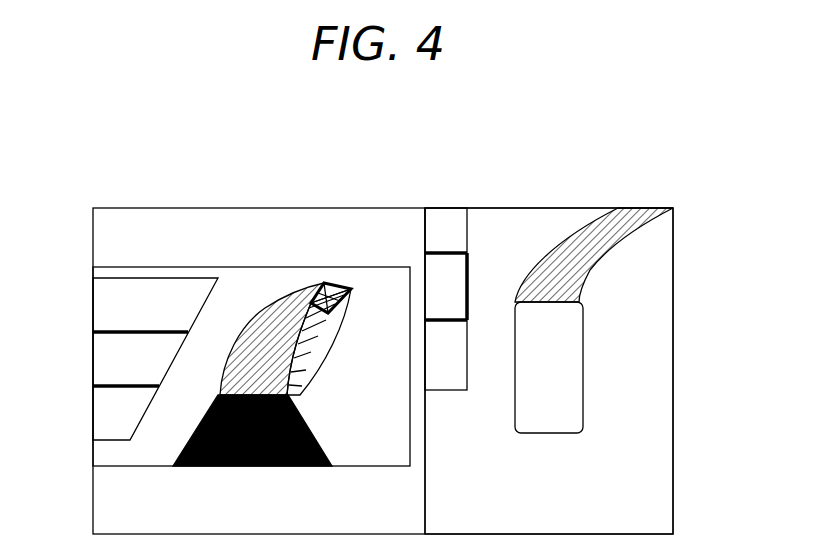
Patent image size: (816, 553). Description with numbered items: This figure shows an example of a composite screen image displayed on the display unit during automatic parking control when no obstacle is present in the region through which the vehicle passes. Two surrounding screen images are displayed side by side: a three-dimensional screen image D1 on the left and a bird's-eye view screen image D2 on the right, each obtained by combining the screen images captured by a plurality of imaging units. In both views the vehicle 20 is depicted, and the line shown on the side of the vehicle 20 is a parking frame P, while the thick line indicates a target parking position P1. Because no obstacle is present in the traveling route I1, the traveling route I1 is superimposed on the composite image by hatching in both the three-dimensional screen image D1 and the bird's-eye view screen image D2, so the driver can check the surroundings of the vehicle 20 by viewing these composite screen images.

The parking frame P is at (152, 268).
The target parking position P1 is at (122, 330).
The traveling route I1 is at (312, 285).
The vehicle 20 is at (272, 468).
The 3D screen image D1 is at (93, 455).
The bird's-eye view screen image D2 is at (674, 449).